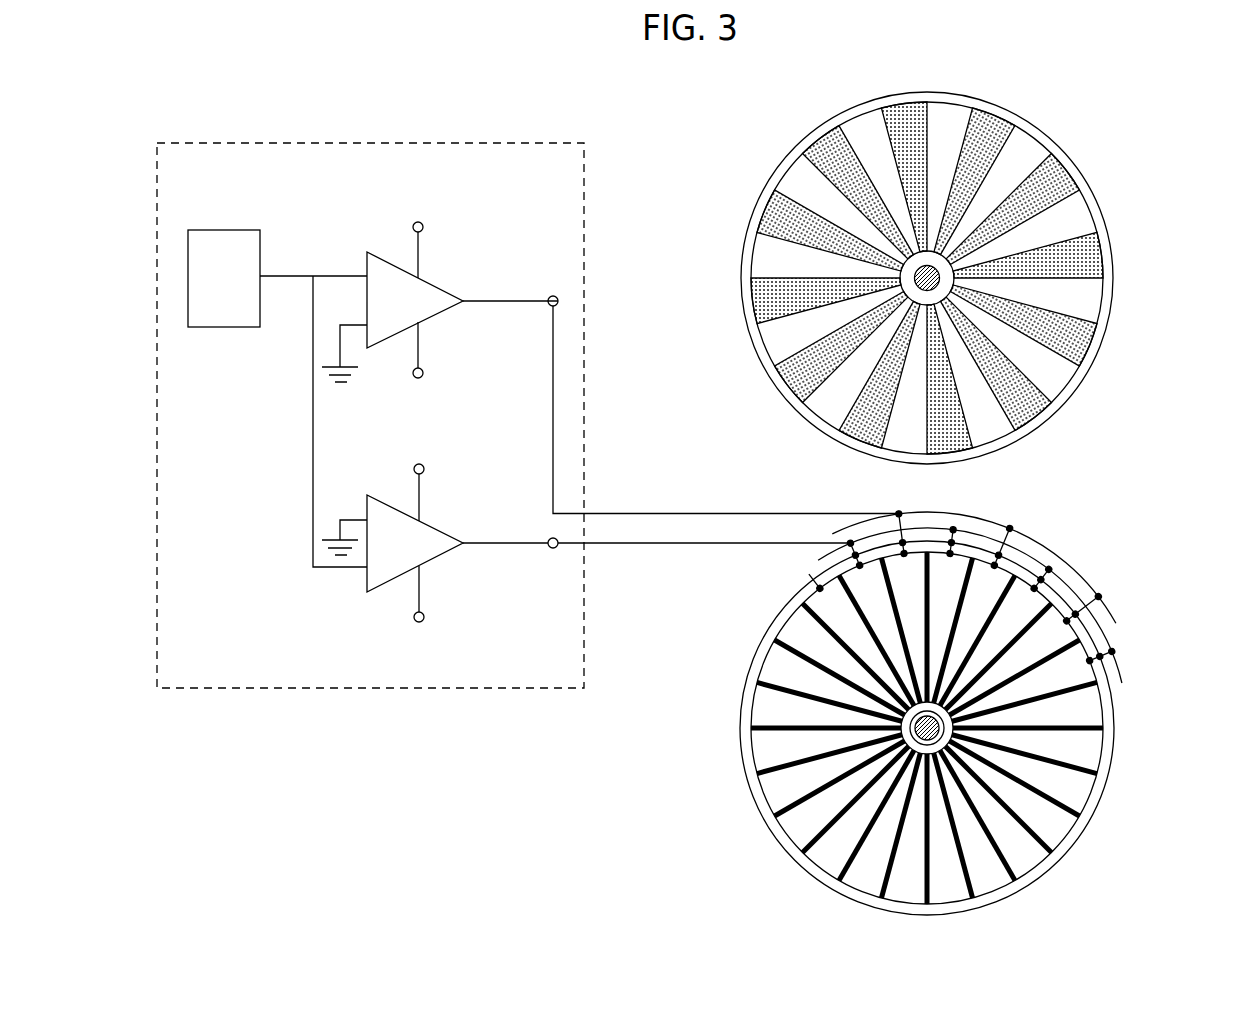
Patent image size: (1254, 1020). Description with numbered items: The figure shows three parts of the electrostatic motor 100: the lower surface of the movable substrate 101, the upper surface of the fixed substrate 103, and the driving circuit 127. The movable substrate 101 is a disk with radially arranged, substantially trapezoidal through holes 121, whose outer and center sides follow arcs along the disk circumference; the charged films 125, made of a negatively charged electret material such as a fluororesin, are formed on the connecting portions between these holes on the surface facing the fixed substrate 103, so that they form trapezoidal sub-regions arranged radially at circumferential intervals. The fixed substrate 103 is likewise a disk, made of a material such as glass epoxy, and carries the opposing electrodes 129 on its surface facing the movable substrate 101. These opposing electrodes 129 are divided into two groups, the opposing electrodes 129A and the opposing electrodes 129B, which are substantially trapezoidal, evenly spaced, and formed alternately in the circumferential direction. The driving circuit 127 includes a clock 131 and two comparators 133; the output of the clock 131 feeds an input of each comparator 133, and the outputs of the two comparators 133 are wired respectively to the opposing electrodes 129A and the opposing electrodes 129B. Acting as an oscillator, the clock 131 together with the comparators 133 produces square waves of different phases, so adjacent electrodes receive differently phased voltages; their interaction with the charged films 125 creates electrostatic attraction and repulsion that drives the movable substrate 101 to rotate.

The electrostatic motor 100 is at (653, 109).
The movable substrate 101 is at (940, 255).
The fixed substrate 103 is at (941, 712).
The through holes 121 is at (1062, 377).
The charged films 125 is at (777, 210).
The driving circuit 127 is at (197, 143).
The opposing electrodes 129 is at (941, 707).
The opposing electrodes 129A is at (785, 670).
The opposing electrodes 129B is at (1115, 660).
The clock 131 is at (247, 328).
The comparators 133 is at (388, 258).